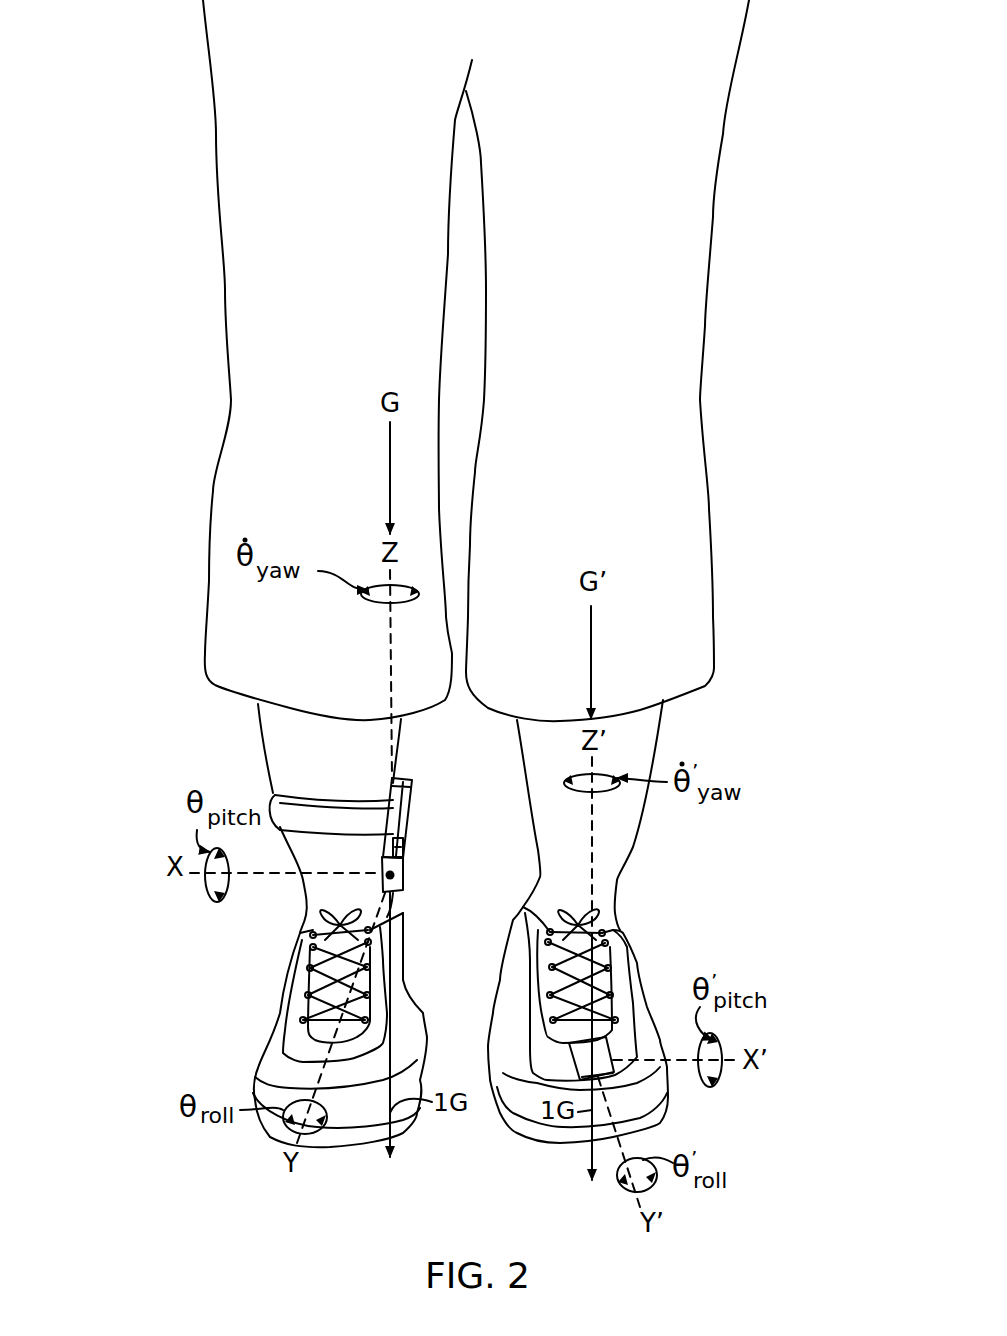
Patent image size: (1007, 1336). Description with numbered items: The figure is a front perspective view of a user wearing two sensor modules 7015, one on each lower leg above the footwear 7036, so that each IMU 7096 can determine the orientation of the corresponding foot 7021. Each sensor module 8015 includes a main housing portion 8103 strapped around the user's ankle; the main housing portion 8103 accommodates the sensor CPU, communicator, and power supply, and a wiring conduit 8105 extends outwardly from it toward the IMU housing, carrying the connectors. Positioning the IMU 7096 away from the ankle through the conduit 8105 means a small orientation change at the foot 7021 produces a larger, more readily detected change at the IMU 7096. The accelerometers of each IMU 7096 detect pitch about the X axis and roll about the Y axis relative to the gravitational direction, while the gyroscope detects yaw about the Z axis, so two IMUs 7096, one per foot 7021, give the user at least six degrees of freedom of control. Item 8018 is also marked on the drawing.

The sensor module 8015 is at (292, 765).
The main housing portion 8103 is at (458, 772).
The wiring conduit 8105 is at (407, 843).
The sensor reference point 8018 is at (402, 873).
The footwear 7036 is at (508, 973).
The sensor module 7015 is at (217, 893).
The foot 7021 is at (613, 1045).
The IMU 7096 is at (600, 1077).